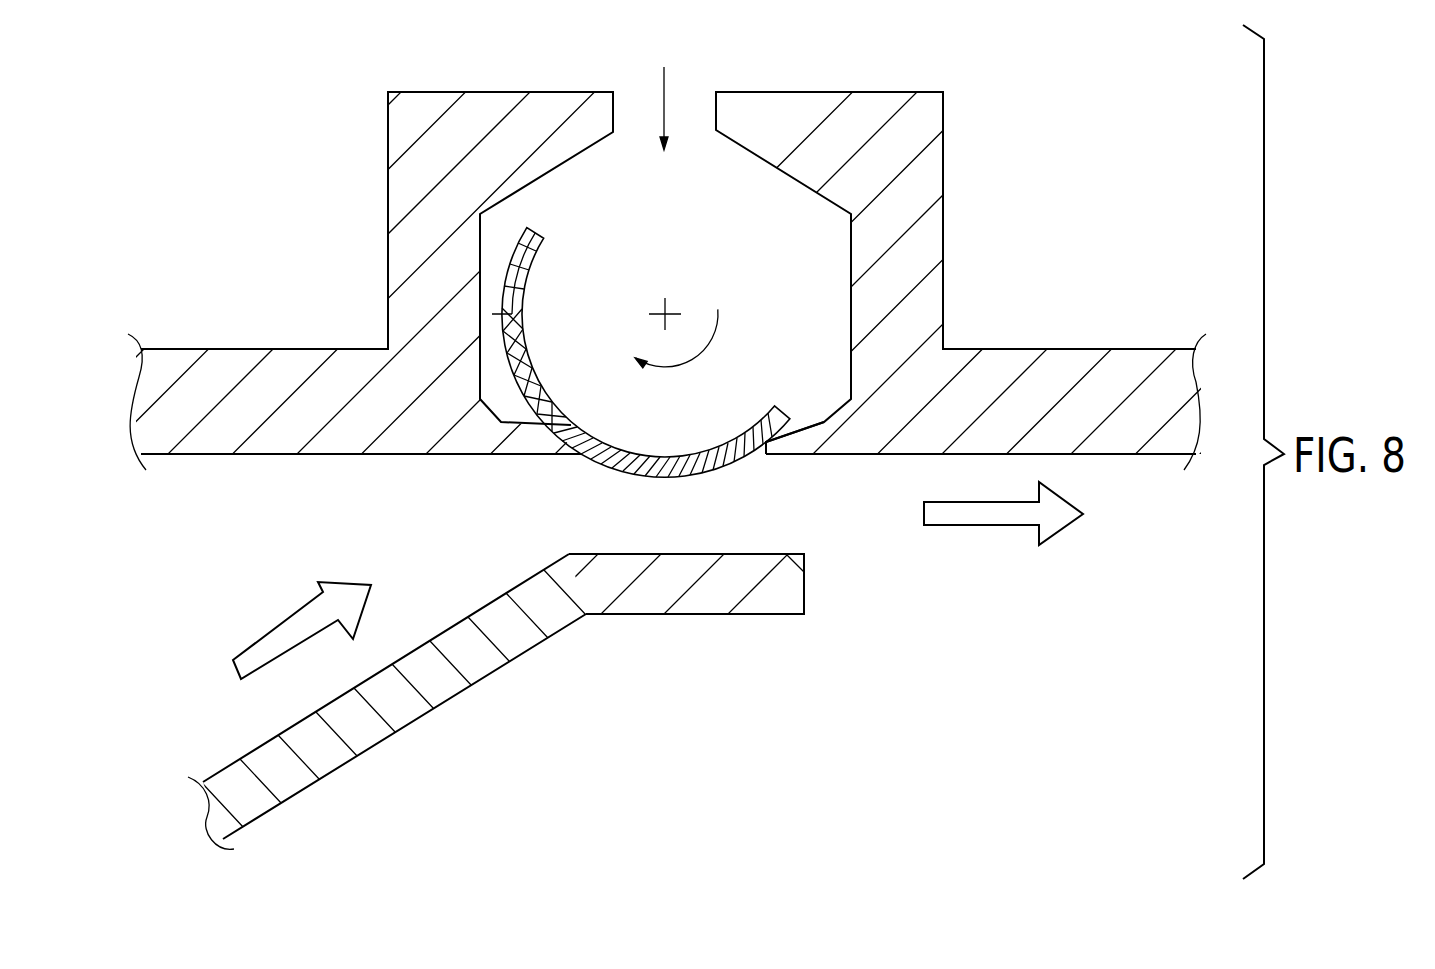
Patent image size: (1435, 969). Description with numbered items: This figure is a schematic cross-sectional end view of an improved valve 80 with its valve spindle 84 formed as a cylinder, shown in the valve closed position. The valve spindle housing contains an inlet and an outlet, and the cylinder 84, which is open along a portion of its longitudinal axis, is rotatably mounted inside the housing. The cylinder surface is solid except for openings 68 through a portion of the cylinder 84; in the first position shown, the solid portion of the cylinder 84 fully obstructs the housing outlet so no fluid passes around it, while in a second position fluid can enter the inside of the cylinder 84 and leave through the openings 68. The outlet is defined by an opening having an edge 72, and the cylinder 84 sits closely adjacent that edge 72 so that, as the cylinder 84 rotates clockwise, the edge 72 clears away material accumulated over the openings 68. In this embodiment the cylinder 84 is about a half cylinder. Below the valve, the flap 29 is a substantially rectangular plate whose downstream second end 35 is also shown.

The valve 80 is at (978, 112).
The openings 68 is at (503, 290).
The edge 72 is at (558, 442).
The valve spindle 84 is at (692, 482).
The second end 35 is at (627, 605).
The flap 29 is at (340, 778).